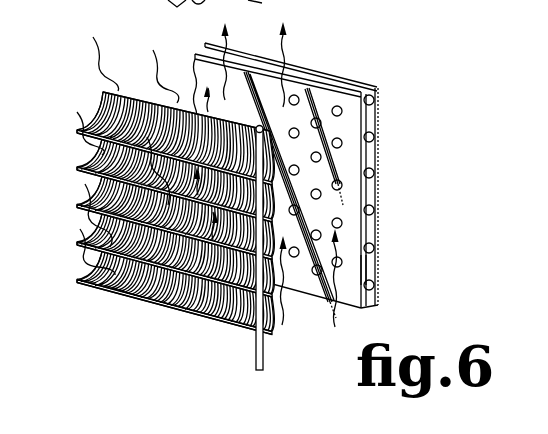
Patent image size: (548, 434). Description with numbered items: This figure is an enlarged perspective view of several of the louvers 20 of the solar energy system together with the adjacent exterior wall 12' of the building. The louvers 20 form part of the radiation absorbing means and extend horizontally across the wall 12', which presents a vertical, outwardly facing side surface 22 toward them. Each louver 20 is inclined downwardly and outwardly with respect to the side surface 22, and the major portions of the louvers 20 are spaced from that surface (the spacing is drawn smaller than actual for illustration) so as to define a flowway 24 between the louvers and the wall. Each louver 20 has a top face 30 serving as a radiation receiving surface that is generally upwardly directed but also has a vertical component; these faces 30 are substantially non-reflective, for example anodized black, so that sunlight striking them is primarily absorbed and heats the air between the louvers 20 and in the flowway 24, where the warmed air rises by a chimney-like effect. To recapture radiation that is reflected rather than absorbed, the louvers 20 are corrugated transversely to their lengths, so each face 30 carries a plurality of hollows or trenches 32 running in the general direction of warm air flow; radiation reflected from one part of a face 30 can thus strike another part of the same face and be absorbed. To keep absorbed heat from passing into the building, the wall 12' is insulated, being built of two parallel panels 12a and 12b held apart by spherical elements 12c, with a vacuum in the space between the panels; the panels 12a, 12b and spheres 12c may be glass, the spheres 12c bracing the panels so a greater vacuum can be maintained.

The louvers 20 is at (148, 211).
The hollows or trenches 32 is at (104, 91).
The top face 30 is at (197, 297).
The side surface 22 is at (330, 99).
The flowway 24 is at (322, 343).
The wall 12' is at (398, 198).
The panel 12a is at (362, 268).
The panel 12b is at (382, 190).
The spherical elements 12c is at (369, 210).